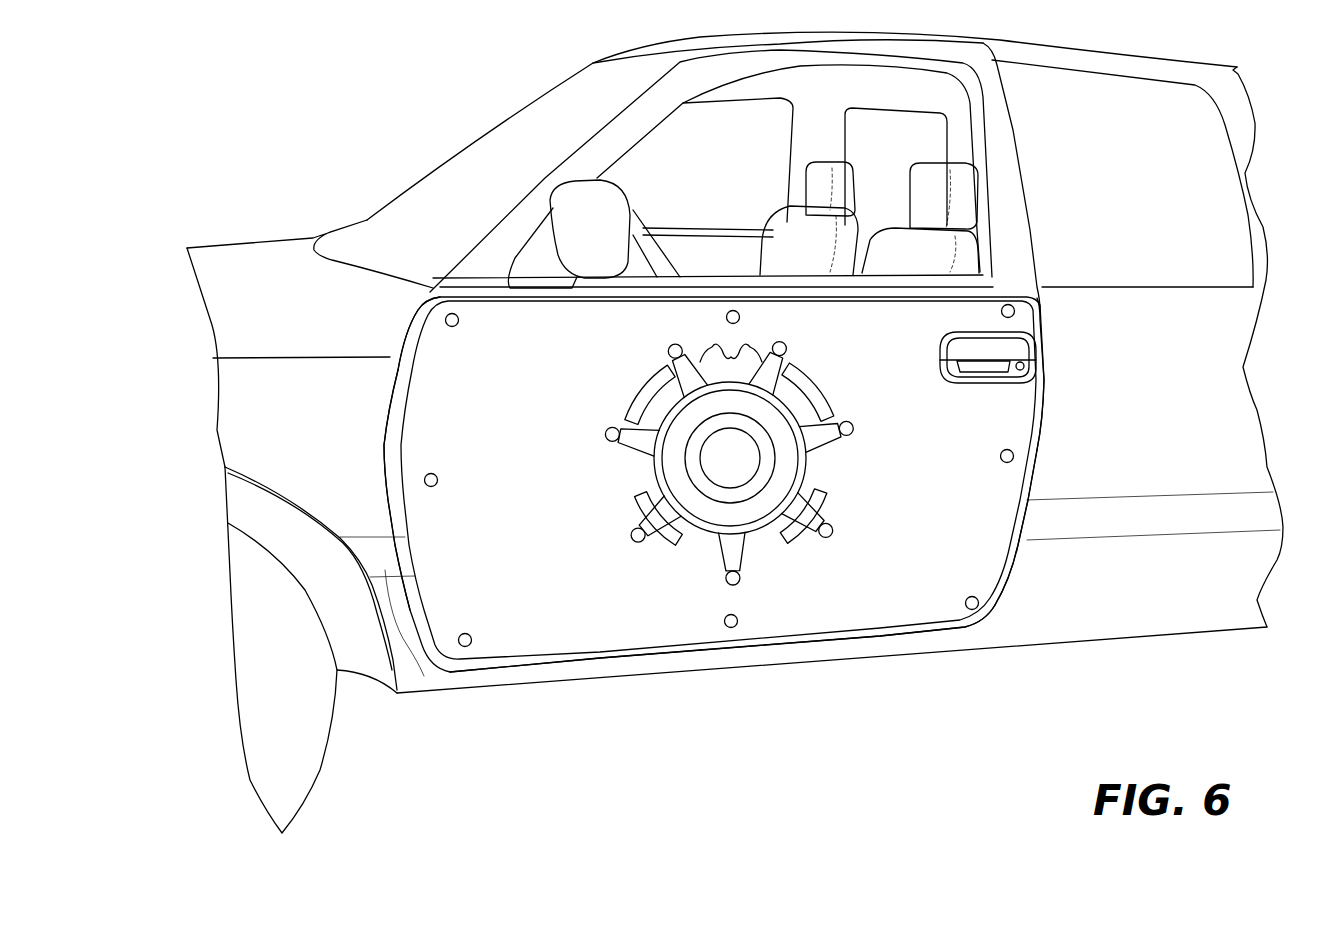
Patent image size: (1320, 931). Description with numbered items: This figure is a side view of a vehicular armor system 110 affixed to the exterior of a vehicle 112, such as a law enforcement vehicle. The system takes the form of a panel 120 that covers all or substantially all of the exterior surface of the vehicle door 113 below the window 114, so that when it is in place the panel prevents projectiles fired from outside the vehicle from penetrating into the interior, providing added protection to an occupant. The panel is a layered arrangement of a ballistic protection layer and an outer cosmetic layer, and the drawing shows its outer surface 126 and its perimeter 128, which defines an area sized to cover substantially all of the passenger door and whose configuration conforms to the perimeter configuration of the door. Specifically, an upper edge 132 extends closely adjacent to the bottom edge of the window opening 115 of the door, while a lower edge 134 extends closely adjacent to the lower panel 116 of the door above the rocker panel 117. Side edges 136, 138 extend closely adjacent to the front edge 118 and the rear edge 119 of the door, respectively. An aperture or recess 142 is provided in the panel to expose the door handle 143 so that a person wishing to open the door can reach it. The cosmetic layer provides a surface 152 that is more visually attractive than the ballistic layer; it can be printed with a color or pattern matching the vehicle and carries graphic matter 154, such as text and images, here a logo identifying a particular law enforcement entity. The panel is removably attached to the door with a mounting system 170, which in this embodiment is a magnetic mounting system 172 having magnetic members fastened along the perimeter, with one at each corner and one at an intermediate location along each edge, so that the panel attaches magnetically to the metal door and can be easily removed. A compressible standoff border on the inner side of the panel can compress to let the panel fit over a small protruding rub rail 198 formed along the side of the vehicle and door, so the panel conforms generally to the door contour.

The vehicular armor system 110 is at (345, 404).
The vehicle 112 is at (232, 253).
The vehicle door 113 is at (1039, 316).
The window 114 is at (960, 153).
The window opening 115 is at (732, 274).
The lower panel 116 is at (567, 665).
The rocker panel 117 is at (677, 665).
The front edge 118 is at (386, 462).
The rear edge 119 is at (1039, 408).
The panel 120 is at (983, 568).
The outer surface 126 is at (718, 480).
The perimeter 128 is at (1033, 443).
The upper edge 132 is at (1003, 287).
The lower edge 134 is at (797, 642).
The side edge 136 is at (408, 330).
The side edge 138 is at (1030, 481).
The aperture or recess 142 is at (937, 360).
The door handle 143 is at (1020, 350).
The surface 152 is at (706, 463).
The graphic matter 154 is at (656, 480).
The mounting system 170 is at (452, 327).
The magnetic mounting system 172 is at (726, 616).
The rub rail 198 is at (420, 694).